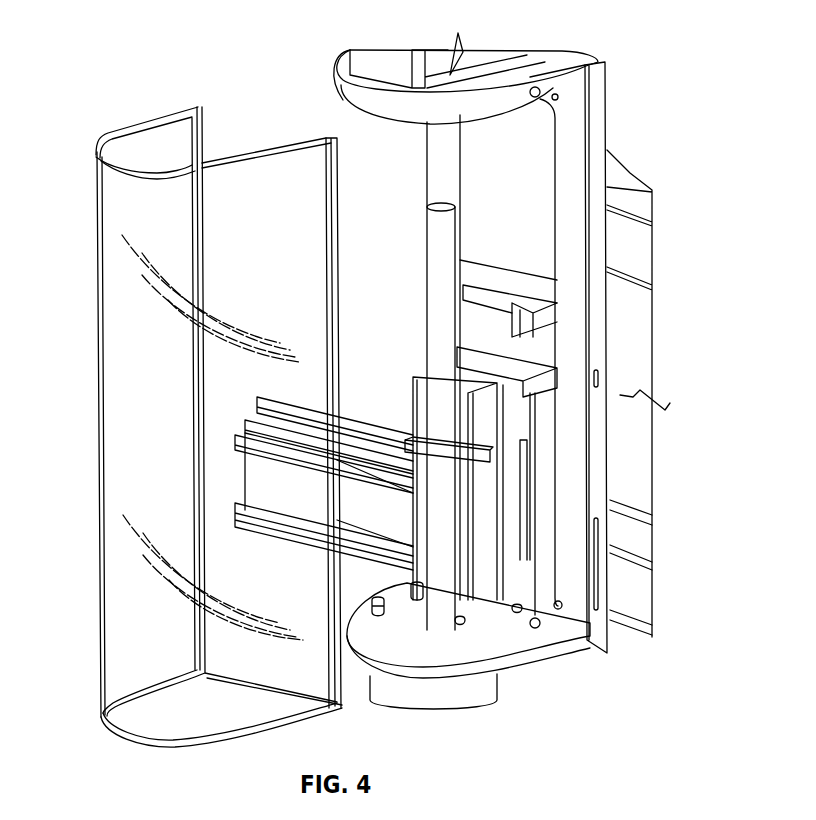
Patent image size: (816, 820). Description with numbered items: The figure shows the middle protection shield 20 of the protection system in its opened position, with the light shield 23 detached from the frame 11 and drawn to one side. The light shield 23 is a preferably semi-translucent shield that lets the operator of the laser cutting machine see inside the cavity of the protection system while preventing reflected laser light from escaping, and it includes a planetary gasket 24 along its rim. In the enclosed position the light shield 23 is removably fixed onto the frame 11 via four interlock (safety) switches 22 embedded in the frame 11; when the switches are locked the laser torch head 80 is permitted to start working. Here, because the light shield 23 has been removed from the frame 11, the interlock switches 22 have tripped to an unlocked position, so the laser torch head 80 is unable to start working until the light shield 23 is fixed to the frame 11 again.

The frame 11 is at (600, 357).
The middle protection shield assembly 20 is at (191, 427).
The interlock switches 22 is at (467, 361).
The light shield 23 is at (80, 434).
The planetary gasket 24 is at (190, 143).
The laser torch head 80 is at (409, 376).